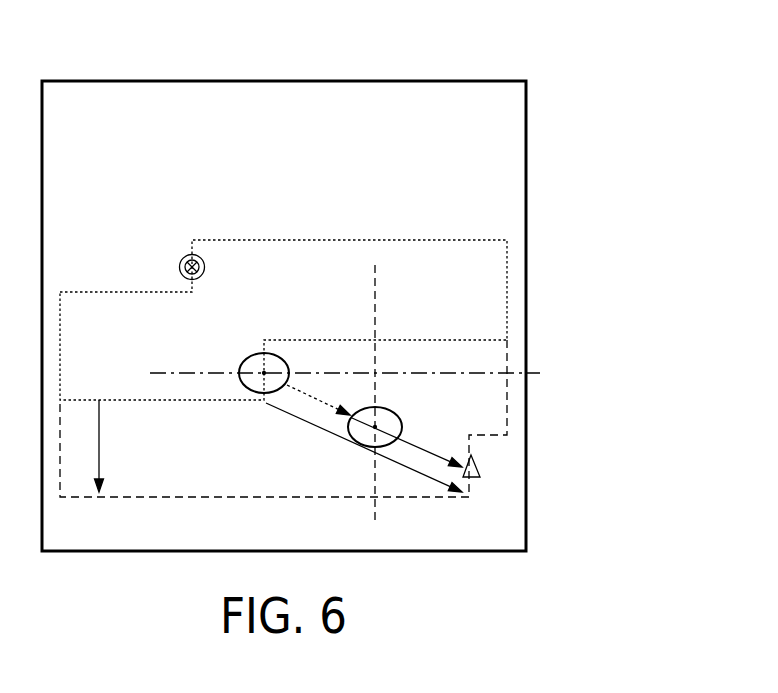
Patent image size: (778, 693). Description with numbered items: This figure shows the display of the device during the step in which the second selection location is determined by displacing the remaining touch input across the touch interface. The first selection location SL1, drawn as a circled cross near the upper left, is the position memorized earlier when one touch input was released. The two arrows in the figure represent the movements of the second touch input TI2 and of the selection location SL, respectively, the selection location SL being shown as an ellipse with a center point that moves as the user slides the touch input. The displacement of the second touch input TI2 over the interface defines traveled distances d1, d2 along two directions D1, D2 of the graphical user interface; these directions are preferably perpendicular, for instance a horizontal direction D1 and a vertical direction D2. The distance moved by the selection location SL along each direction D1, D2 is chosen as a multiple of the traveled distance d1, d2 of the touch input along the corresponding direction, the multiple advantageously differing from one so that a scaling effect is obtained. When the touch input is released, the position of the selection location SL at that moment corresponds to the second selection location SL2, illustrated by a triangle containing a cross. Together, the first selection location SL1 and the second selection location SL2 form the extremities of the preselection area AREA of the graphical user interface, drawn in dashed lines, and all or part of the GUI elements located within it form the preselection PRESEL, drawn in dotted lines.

The first selection location SL1 is at (213, 246).
The selection location SL is at (239, 352).
The second selection location SL2 is at (494, 485).
The second touch input TI2 is at (352, 433).
The first direction D1 is at (345, 359).
The second direction D2 is at (395, 392).
The traveled distance d1 is at (319, 372).
The traveled distance d2 is at (378, 388).
The preselection PRESEL is at (521, 349).
The preselection area AREA is at (348, 418).